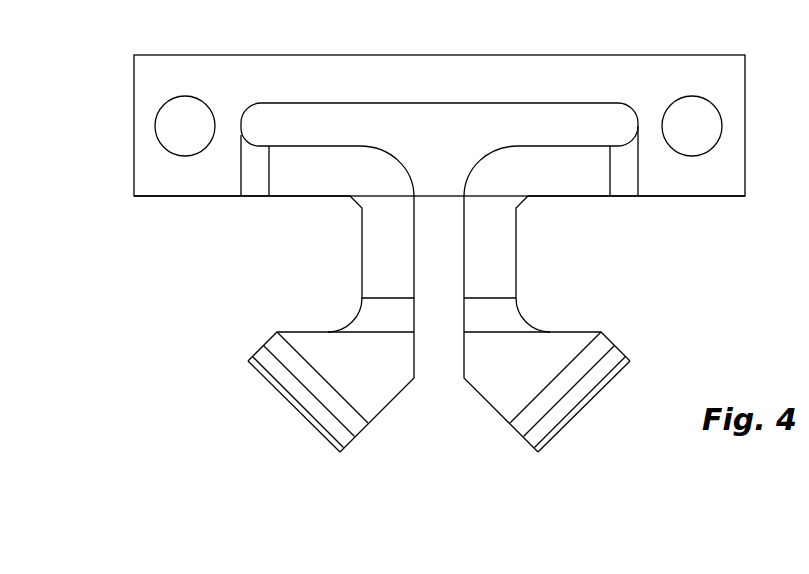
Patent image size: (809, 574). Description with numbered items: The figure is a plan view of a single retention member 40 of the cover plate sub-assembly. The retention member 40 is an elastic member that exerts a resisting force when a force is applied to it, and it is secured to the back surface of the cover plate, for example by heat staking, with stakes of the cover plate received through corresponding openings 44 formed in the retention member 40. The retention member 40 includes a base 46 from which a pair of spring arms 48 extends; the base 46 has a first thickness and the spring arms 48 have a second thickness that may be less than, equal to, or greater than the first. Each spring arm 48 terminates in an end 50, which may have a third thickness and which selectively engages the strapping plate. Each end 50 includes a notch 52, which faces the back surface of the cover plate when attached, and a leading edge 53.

The retention member 40 is at (166, 274).
The opening 44 is at (158, 112).
The base 46 is at (437, 55).
The spring arm 48 is at (362, 252).
The end 50 is at (270, 333).
The notch 52 is at (333, 448).
The leading edge 53 is at (282, 396).